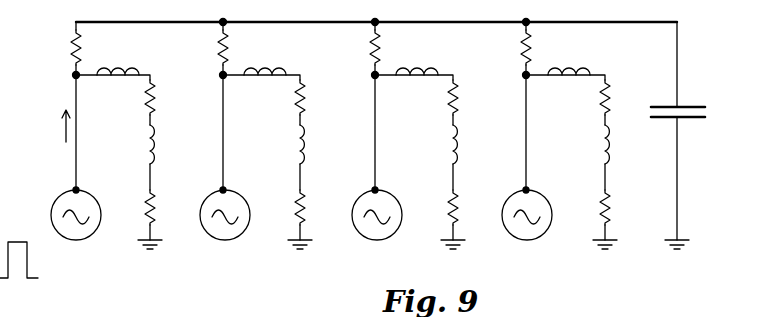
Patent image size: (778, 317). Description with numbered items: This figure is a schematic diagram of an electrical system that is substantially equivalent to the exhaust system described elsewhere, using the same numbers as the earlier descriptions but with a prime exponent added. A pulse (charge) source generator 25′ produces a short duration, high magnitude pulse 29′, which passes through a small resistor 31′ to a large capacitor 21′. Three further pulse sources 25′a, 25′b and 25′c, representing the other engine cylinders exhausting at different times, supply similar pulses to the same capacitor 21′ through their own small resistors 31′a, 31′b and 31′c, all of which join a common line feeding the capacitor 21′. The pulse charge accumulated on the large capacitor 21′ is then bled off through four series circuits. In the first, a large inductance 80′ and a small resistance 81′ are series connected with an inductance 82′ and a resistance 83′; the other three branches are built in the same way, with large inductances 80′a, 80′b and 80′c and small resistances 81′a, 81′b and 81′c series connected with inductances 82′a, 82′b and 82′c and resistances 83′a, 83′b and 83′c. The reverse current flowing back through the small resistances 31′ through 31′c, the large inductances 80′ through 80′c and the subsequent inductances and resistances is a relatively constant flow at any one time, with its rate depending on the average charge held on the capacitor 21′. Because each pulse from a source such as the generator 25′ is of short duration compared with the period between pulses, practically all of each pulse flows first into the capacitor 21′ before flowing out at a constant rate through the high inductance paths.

The small resistor 31′ is at (71, 46).
The large inductance 80′ is at (116, 72).
The small resistance 81′ is at (145, 110).
The inductance 82′ is at (143, 145).
The resistance 83′ is at (148, 204).
The pulse (charge) source generator 25′ is at (58, 198).
The pulse 29′ is at (32, 266).
The large capacitor 21′ is at (693, 102).
The small resistor 31′a is at (219, 44).
The large inductance 80′a is at (266, 72).
The small resistance 81′a is at (297, 110).
The inductance 82′a is at (297, 145).
The resistance 83′a is at (298, 204).
The pulse source 25′a is at (209, 198).
The small resistor 31′b is at (373, 44).
The large inductance 80′b is at (418, 72).
The small resistance 81′b is at (449, 110).
The inductance 82′b is at (449, 145).
The resistance 83′b is at (451, 204).
The pulse source 25′b is at (361, 198).
The small resistor 31′c is at (523, 44).
The large inductance 80′c is at (570, 72).
The small resistance 81′c is at (601, 110).
The inductance 82′c is at (601, 145).
The resistance 83′c is at (603, 204).
The pulse source 25′c is at (511, 198).